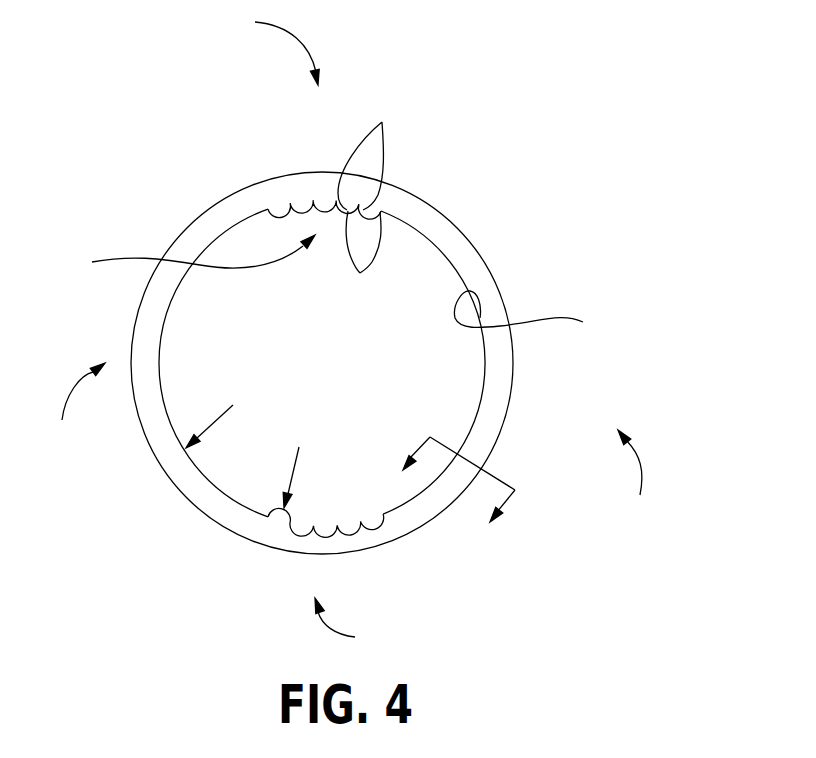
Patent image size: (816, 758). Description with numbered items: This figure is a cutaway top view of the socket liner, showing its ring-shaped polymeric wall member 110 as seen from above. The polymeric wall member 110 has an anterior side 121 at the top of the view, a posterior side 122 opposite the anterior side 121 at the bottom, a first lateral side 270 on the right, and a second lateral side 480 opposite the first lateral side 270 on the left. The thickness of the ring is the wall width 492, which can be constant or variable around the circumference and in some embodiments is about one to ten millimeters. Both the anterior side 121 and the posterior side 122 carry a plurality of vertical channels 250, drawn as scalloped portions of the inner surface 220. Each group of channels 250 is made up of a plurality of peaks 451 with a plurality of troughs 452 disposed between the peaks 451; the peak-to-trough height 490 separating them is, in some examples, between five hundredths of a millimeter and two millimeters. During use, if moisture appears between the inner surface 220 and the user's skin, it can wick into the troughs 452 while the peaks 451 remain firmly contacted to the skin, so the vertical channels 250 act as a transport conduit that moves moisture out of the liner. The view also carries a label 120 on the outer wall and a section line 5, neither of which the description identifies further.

The polymeric wall member 110 is at (283, 190).
The outer wall of tube 120 is at (178, 238).
The anterior side 121 is at (268, 46).
The posterior side 122 is at (355, 624).
The inner surface 220 is at (382, 363).
The vertical channels 250 is at (183, 257).
The first lateral side 270 is at (634, 479).
The peaks 451 is at (363, 257).
The troughs 452 is at (369, 152).
The second lateral side 480 is at (74, 407).
The peak-to-trough height 490 is at (274, 541).
The wall width 492 is at (150, 477).
The section line 5-5' 5 is at (471, 467).